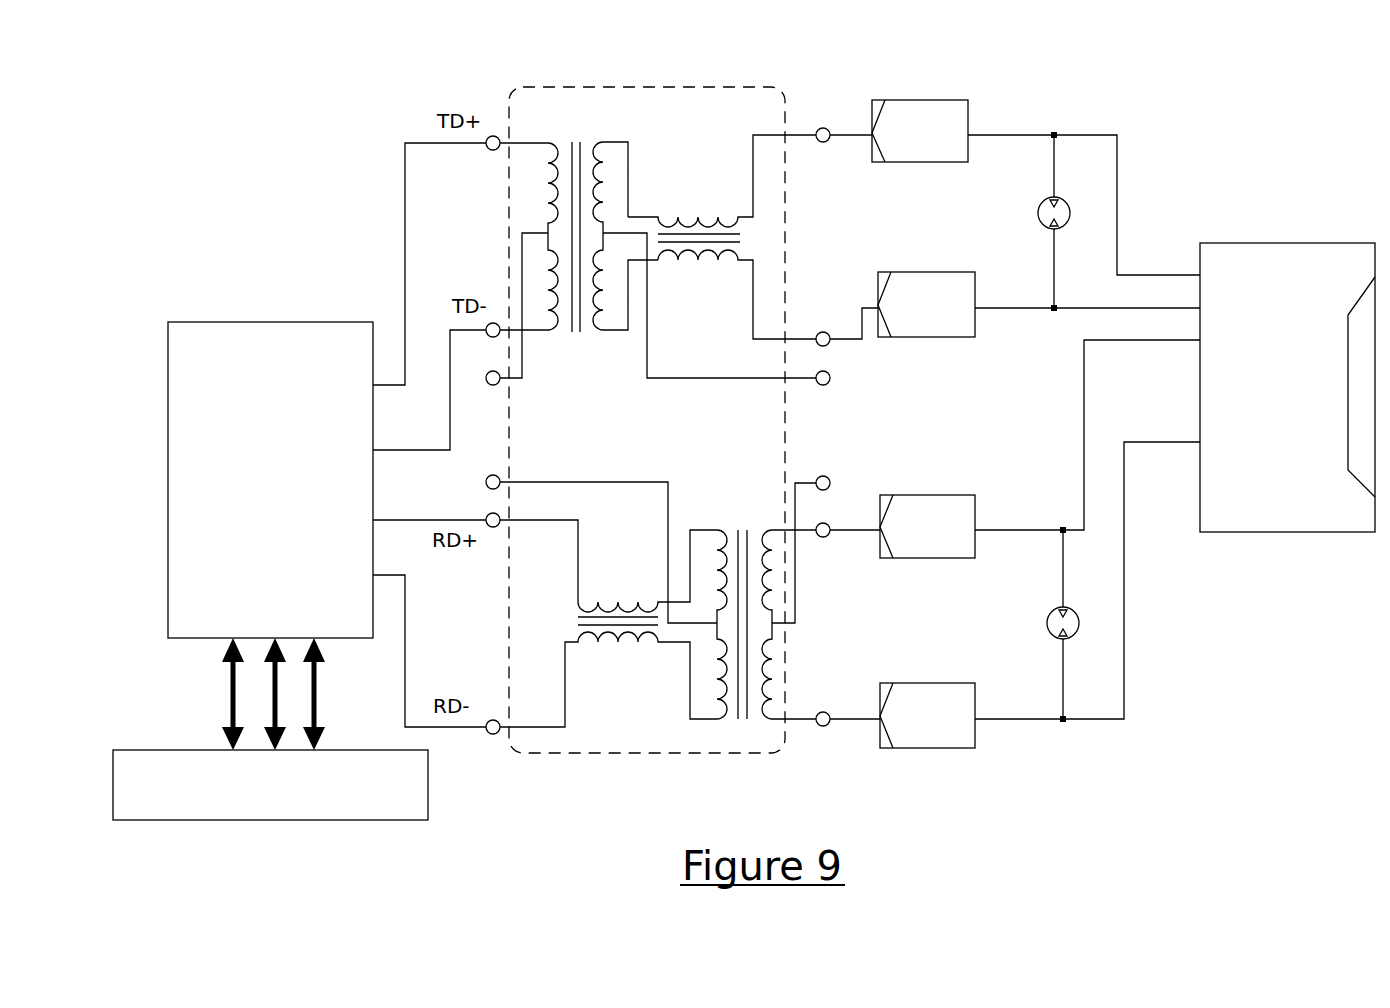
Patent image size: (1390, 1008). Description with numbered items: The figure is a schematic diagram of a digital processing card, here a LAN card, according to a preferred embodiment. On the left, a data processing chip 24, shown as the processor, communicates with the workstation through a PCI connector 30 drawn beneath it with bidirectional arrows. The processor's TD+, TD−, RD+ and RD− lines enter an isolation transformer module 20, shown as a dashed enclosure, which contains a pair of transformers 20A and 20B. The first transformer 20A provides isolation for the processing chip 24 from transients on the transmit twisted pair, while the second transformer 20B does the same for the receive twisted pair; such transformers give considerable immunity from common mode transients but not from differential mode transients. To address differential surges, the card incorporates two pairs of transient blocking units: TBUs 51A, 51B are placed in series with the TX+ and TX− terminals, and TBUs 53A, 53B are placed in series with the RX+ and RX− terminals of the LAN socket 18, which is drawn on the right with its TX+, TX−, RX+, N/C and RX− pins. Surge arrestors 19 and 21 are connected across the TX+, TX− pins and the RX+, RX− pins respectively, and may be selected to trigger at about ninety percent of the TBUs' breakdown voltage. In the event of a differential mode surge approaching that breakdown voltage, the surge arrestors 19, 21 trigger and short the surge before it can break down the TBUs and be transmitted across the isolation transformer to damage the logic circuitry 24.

The RJ-45 socket 18 is at (1340, 519).
The surge arrestor 19 is at (1045, 198).
The isolation transformer module 20 is at (772, 86).
The isolation transformer 20A is at (540, 125).
The isolation transformer 20B is at (711, 494).
The surge arrestor 21 is at (1057, 610).
The data processing chip 24 is at (291, 404).
The PCI connector 30 is at (157, 820).
The transient blocking unit 51A is at (932, 100).
The transient blocking unit 51B is at (907, 272).
The transient blocking unit 53A is at (908, 495).
The transient blocking unit 53B is at (908, 683).